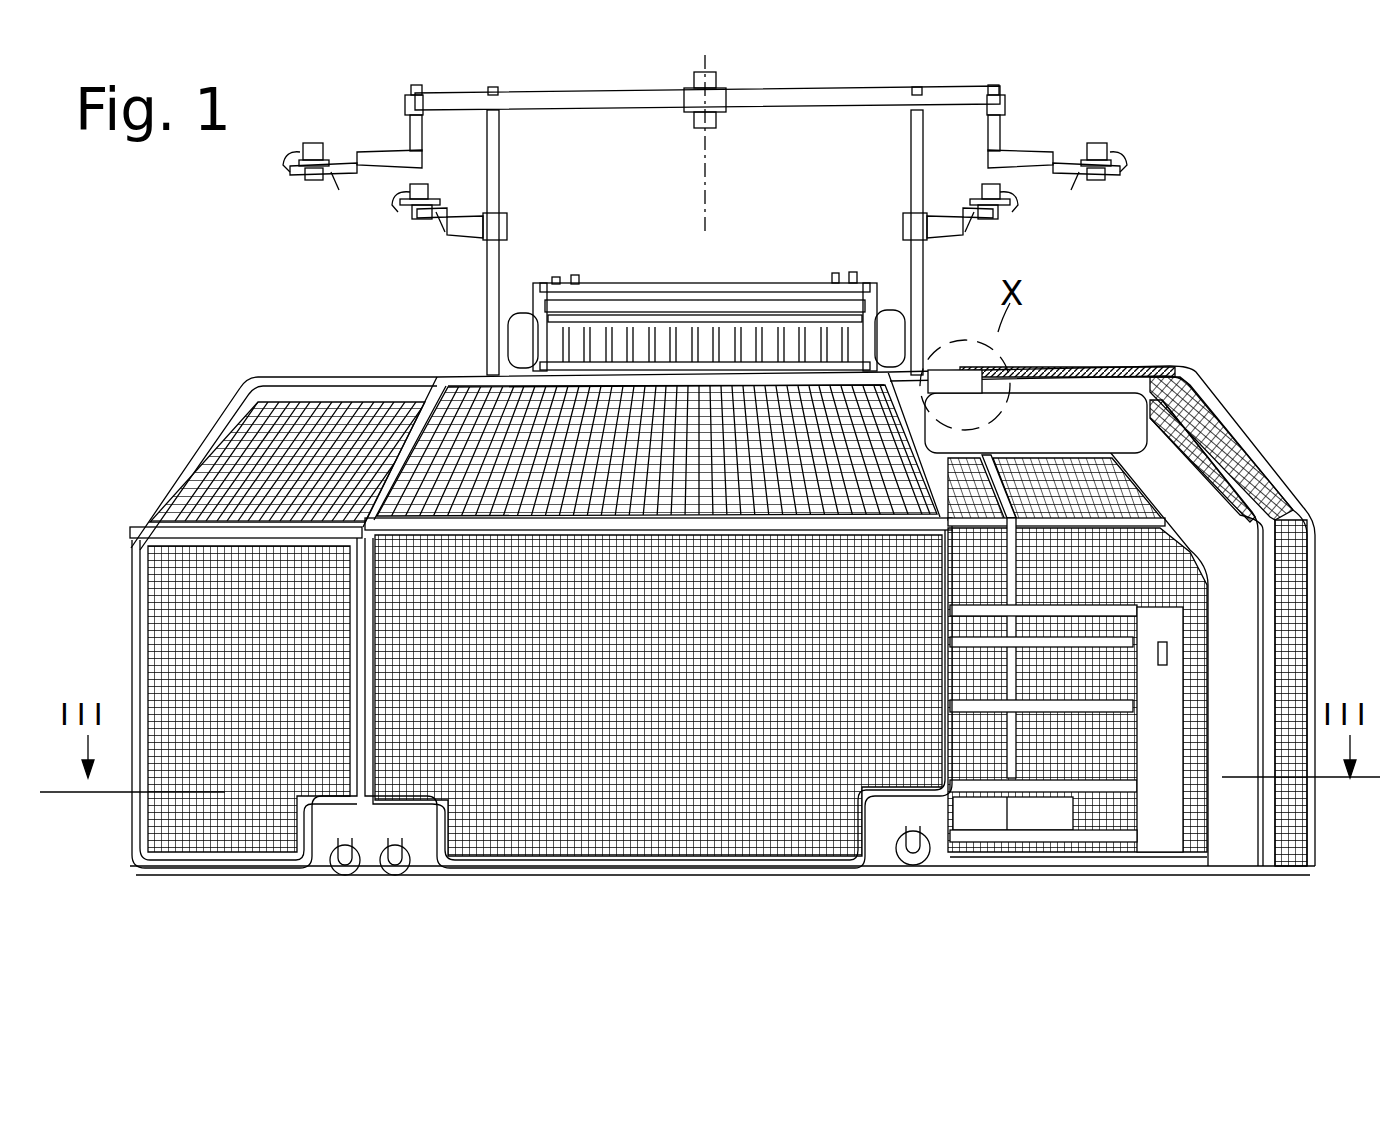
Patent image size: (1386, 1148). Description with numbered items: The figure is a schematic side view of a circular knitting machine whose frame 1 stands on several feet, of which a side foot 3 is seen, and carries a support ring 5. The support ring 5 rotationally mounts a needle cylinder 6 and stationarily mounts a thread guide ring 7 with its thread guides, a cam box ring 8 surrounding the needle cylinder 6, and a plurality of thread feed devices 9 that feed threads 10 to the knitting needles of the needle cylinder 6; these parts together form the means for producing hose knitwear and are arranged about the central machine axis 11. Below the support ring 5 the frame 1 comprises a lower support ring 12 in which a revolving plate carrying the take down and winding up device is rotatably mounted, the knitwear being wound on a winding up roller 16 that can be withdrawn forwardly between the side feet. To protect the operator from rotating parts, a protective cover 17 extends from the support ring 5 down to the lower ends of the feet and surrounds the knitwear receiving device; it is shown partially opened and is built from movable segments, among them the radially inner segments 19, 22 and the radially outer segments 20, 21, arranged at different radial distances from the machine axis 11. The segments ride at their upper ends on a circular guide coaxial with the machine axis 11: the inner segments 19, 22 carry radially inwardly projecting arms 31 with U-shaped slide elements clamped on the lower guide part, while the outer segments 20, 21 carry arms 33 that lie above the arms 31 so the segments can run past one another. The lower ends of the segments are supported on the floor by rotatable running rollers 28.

The frame 1 is at (1055, 355).
The foot 3 is at (1227, 613).
The support ring 5 is at (915, 352).
The needle cylinder 6 is at (687, 300).
The thread guide ring 7 is at (558, 281).
The cam box ring 8 is at (734, 348).
The thread feed devices 9 is at (417, 223).
The threads 10 is at (1003, 178).
The machine axis 11 is at (706, 148).
The lower support ring 12 is at (975, 860).
The winding up roller 16 is at (1095, 790).
The protective cover 17 is at (200, 382).
The segment 19 is at (1250, 505).
The segment 20 is at (1310, 662).
The segment 21 is at (620, 782).
The segment 22 is at (230, 810).
The running rollers 28 is at (395, 880).
The arms 31 is at (1036, 423).
The arms 33 is at (1100, 372).